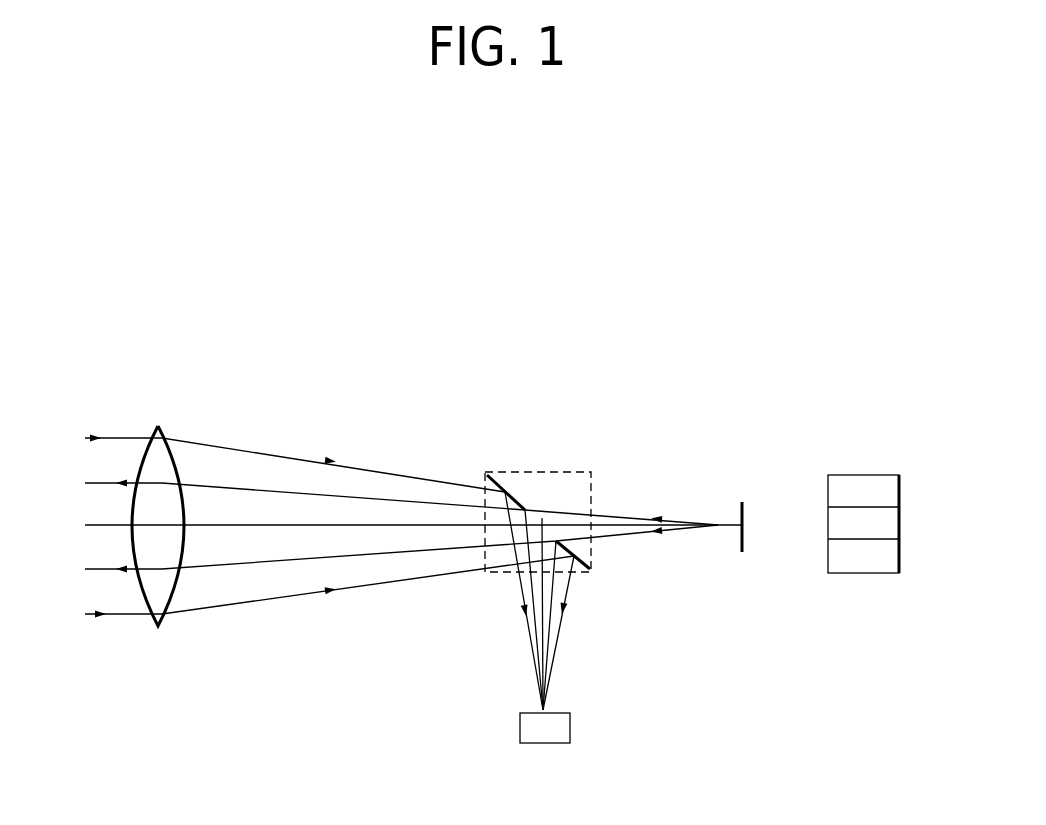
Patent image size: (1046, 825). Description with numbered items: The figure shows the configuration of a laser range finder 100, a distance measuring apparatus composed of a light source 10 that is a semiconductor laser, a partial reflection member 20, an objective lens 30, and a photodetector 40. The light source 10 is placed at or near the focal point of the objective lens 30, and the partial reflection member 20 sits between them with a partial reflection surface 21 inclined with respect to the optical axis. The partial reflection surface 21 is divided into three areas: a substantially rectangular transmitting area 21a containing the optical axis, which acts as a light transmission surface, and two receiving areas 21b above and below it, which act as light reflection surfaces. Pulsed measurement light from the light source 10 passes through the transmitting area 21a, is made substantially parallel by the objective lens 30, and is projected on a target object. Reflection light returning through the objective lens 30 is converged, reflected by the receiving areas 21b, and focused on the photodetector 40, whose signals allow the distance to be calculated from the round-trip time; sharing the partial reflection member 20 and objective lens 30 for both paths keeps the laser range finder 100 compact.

The laser range finder 100 is at (453, 332).
The objective lens 30 is at (157, 426).
The light source 10 is at (742, 503).
The partial reflection member 20 is at (485, 478).
The partial reflection surface 21 is at (470, 397).
The transmitting area 21a is at (542, 506).
The receiving areas 21b is at (505, 472).
The photodetector 40 is at (570, 726).